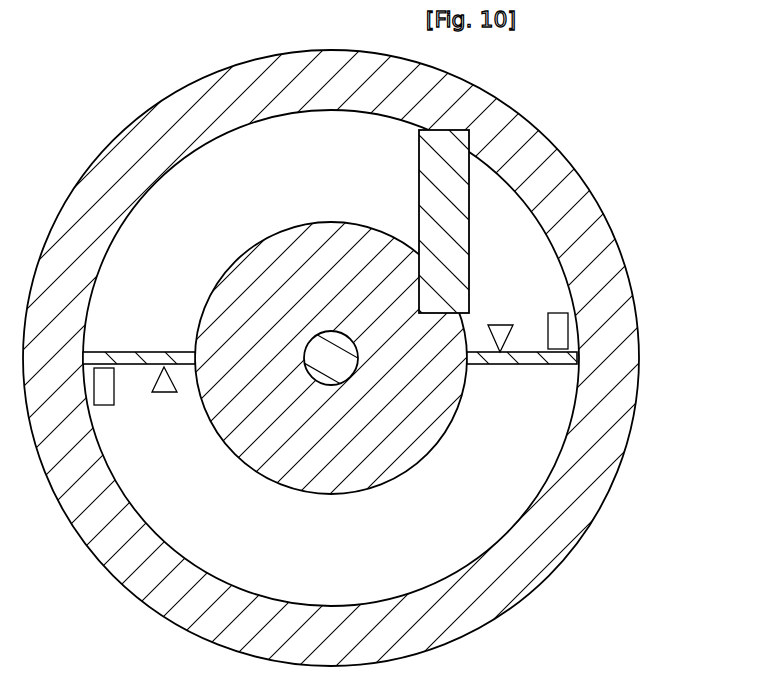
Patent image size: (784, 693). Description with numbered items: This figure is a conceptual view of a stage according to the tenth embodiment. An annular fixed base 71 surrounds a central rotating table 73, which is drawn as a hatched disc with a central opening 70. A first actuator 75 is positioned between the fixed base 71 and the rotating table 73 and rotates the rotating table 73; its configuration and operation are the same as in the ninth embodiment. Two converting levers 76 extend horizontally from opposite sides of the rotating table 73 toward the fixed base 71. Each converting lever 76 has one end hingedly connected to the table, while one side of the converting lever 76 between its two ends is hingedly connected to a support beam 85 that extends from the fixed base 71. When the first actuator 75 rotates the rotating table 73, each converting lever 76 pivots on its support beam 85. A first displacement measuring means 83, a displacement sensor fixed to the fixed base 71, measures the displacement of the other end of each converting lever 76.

The shaft hole 70 is at (312, 378).
The fixed base 71 is at (609, 273).
The rotating table 73 is at (391, 472).
The first actuator 75 is at (432, 187).
The converting lever 76 is at (135, 350).
The first displacement measuring means 83 is at (107, 405).
The support beam 85 is at (162, 393).